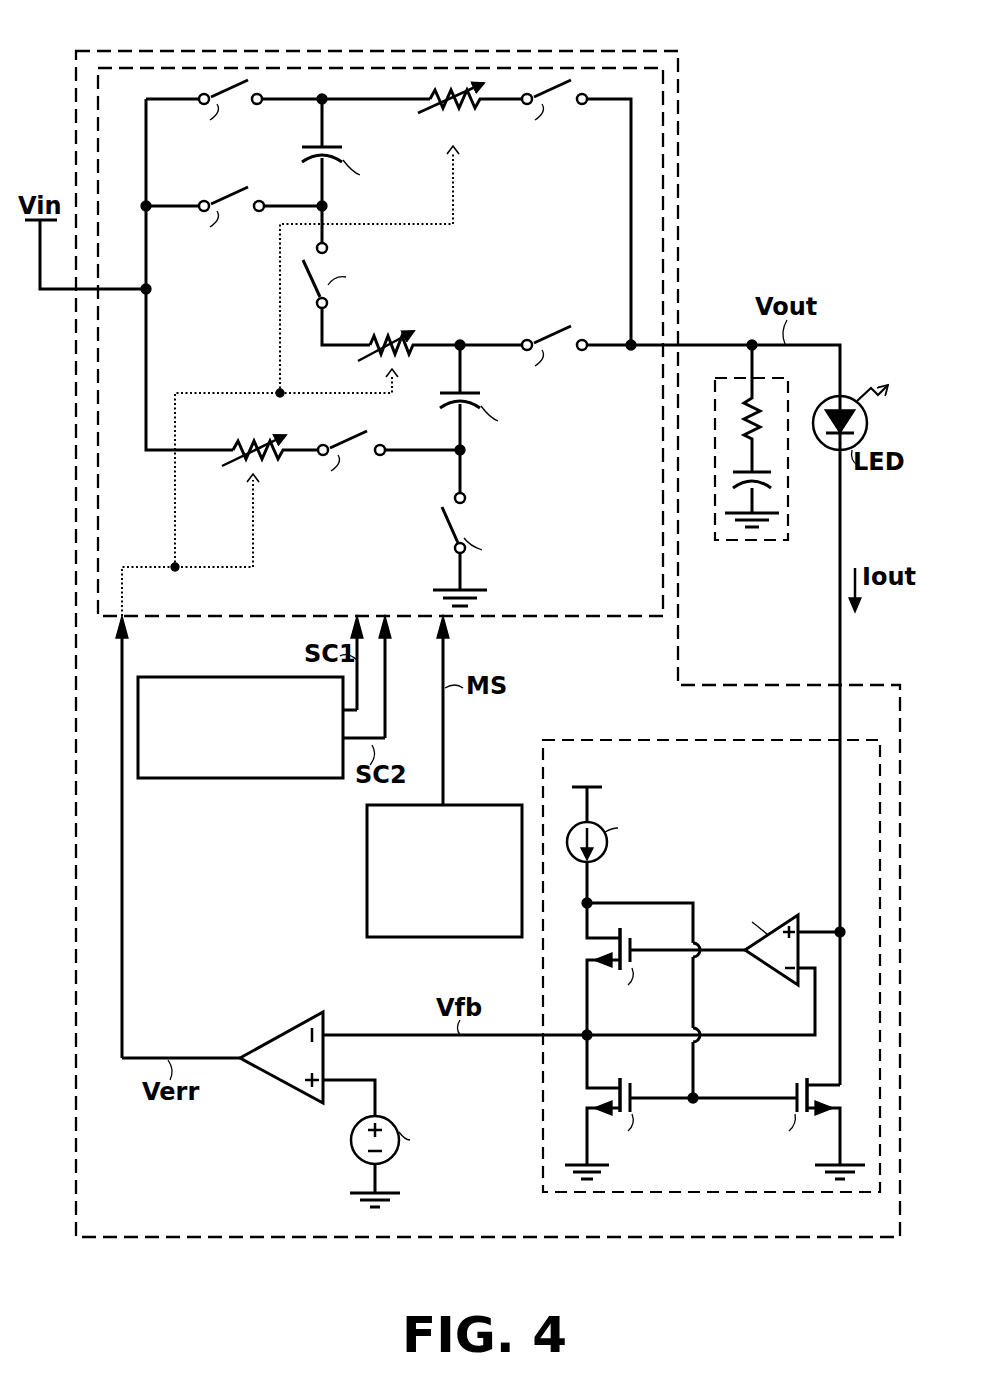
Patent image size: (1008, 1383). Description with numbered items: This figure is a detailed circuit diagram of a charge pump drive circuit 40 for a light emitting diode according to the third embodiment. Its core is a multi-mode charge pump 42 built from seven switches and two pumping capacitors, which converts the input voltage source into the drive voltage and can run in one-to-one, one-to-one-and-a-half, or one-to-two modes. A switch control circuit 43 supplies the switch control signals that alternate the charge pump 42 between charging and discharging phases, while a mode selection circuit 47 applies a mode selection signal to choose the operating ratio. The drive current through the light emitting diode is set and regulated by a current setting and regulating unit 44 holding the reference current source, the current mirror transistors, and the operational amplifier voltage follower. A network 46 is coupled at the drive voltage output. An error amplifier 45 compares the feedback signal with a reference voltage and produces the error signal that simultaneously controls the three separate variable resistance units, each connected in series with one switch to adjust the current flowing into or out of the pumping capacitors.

The charge pump drive circuit 40 is at (122, 51).
The charge pump circuit 42 is at (556, 616).
The switch control circuit 43 is at (200, 778).
The current sensing / mirror circuit 44 is at (625, 740).
The error amplifier 45 is at (272, 1085).
The output filter 46 is at (752, 540).
The mode selection circuit 47 is at (367, 893).